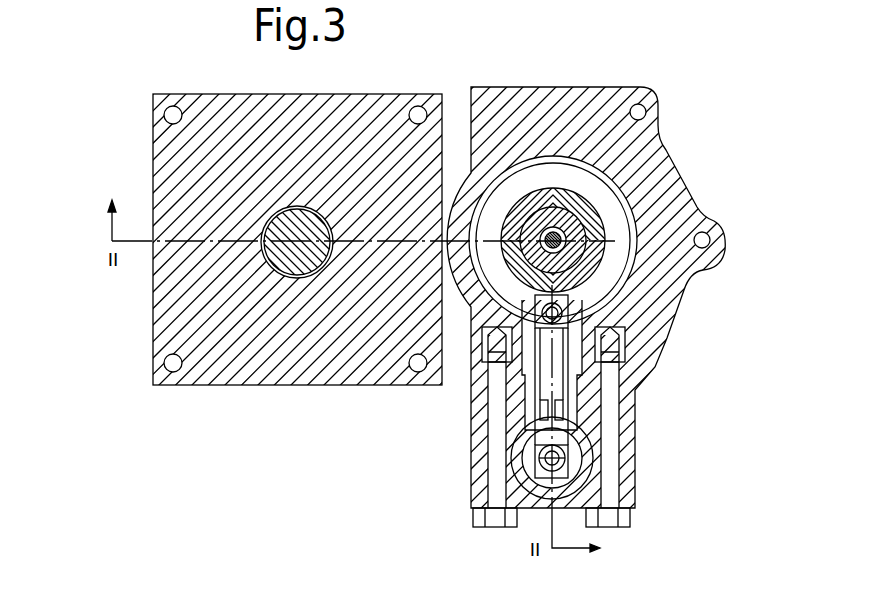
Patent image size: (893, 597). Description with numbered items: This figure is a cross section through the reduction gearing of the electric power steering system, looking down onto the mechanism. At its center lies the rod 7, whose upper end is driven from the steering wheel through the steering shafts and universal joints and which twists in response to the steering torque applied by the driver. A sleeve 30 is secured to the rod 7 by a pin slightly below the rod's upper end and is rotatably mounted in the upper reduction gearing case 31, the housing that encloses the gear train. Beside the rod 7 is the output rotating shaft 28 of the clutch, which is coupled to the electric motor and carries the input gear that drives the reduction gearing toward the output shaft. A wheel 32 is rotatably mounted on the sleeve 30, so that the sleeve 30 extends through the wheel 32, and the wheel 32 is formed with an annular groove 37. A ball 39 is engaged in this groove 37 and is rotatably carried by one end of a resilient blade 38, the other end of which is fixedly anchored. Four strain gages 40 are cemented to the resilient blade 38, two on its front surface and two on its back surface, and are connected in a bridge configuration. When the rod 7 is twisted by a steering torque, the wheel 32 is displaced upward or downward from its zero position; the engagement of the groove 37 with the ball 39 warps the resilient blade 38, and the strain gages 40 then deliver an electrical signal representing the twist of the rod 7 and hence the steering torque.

The rod 7 is at (567, 247).
The output rotating shaft 28 is at (297, 262).
The sleeve 30 is at (565, 218).
The upper reduction gearing case 31 is at (660, 136).
The wheel 32 is at (634, 216).
The annular groove 37 is at (613, 272).
The resilient blade 38 is at (557, 432).
The ball 39 is at (570, 307).
The strain gages 40 is at (565, 415).